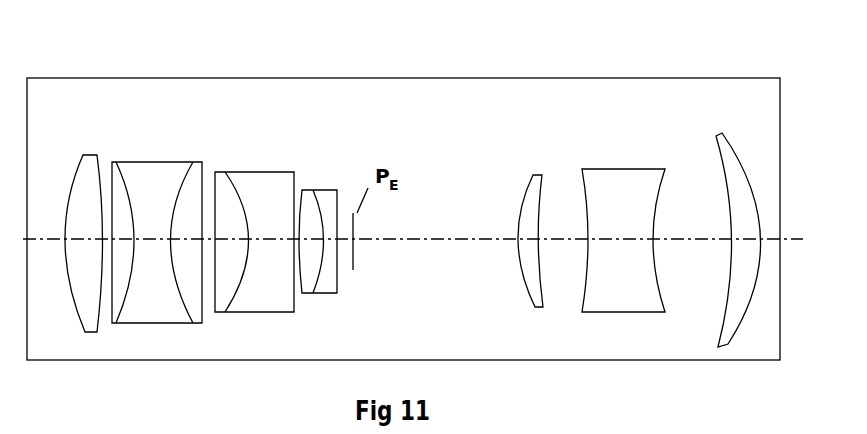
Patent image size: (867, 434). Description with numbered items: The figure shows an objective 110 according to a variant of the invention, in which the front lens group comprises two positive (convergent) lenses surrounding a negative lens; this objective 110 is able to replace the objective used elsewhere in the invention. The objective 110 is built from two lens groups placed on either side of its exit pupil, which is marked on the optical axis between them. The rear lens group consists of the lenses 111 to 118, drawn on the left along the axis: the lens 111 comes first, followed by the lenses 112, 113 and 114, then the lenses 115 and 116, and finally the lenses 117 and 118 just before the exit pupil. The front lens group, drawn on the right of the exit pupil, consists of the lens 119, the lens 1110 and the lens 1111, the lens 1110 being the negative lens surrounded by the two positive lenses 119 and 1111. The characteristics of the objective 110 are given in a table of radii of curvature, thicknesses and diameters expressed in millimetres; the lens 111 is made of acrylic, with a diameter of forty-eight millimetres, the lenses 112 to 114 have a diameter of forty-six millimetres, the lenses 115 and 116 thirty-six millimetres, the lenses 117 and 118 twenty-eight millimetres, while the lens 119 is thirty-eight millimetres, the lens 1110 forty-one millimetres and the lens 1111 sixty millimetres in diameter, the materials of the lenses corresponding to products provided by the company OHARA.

The objective 110 is at (167, 83).
The lens 111 is at (89, 163).
The lens 112 is at (122, 172).
The lens 113 is at (152, 173).
The lens 114 is at (195, 177).
The lens 115 is at (226, 183).
The lens 116 is at (259, 180).
The lens 117 is at (312, 195).
The lens 118 is at (328, 197).
The lens 119 is at (538, 175).
The lens 1110 is at (623, 178).
The lens 1111 is at (724, 140).